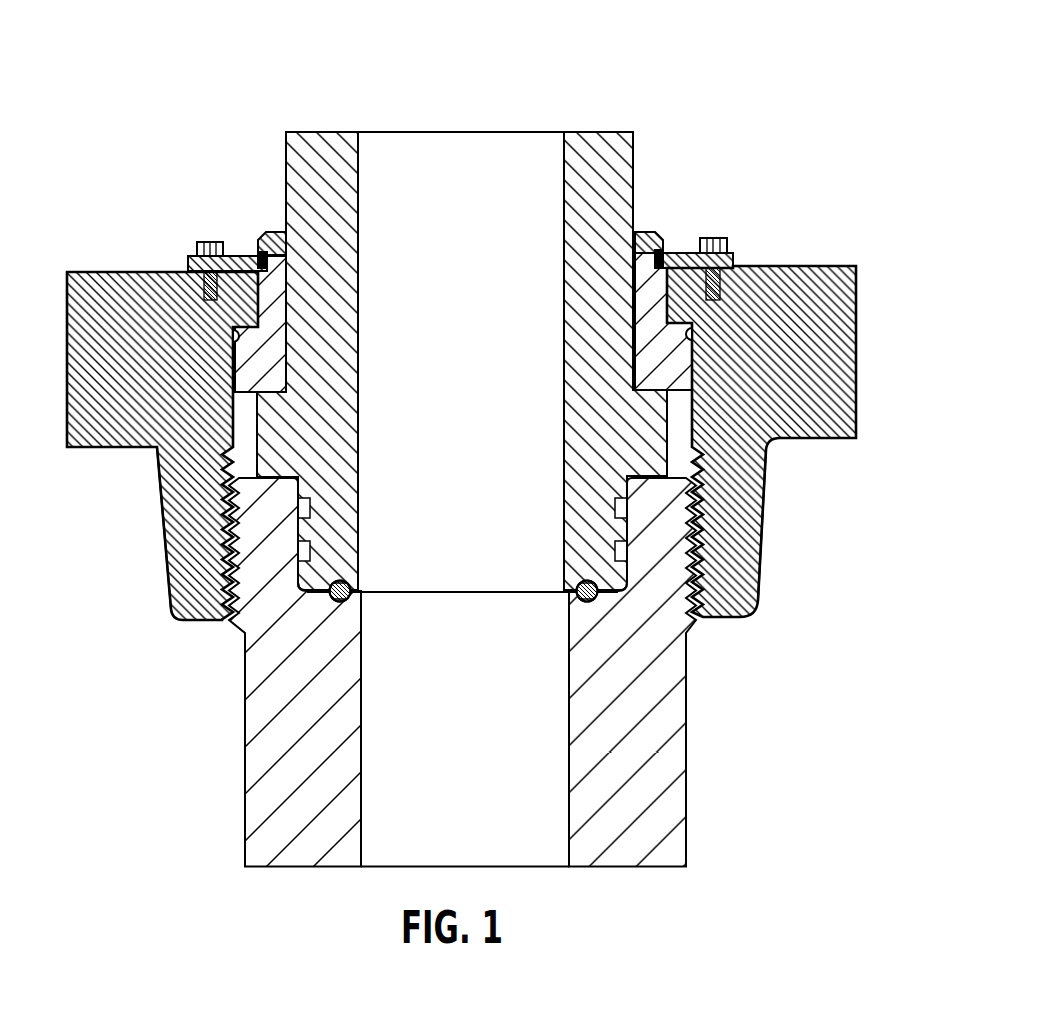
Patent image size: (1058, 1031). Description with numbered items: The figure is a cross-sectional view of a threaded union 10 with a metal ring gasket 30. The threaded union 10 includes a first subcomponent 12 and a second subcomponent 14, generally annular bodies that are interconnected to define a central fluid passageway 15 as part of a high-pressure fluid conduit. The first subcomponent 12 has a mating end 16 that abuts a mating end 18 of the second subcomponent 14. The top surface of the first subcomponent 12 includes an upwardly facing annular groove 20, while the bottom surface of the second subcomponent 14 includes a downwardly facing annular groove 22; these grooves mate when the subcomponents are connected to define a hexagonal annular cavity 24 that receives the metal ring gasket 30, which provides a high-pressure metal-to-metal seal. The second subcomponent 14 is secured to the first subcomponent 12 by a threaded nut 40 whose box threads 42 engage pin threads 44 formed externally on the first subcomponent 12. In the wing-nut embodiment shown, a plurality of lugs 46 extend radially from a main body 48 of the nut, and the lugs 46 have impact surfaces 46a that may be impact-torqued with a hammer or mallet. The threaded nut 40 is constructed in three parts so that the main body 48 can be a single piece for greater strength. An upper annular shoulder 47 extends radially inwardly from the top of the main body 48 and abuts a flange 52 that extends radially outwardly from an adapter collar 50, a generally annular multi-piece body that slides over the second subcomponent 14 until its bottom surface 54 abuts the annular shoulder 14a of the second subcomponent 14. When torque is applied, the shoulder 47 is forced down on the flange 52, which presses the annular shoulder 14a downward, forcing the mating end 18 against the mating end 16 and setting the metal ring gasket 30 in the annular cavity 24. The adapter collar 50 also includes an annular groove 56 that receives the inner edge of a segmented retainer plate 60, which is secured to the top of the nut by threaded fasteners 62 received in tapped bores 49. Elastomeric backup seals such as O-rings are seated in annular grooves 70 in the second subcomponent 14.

The threaded union 10 is at (722, 66).
The first subcomponent 12 is at (240, 790).
The second subcomponent 14 is at (282, 167).
The annular shoulder 14a is at (262, 440).
The central fluid passageway 15 is at (487, 470).
The mating end 16 is at (310, 596).
The mating end 18 is at (327, 578).
The upwardly facing annular groove 20 is at (350, 601).
The downwardly facing annular groove 22 is at (343, 581).
The annular cavity 24 is at (612, 612).
The metal ring gasket 30 is at (588, 603).
The threaded nut 40 is at (134, 264).
The box threads 42 is at (702, 578).
The pin threads 44 is at (700, 593).
The lugs 46 is at (84, 271).
The impact surfaces 46a is at (85, 385).
The upper annular shoulder 47 is at (242, 303).
The main body 48 is at (164, 521).
The tapped bores 49 is at (720, 283).
The adapter collar 50 is at (268, 230).
The flange 52 is at (248, 340).
The bottom surface 54 is at (264, 384).
The annular groove 56 is at (266, 263).
The segmented retainer plate 60 is at (673, 252).
The threaded fasteners 62 is at (712, 238).
The annular grooves 70 is at (617, 550).